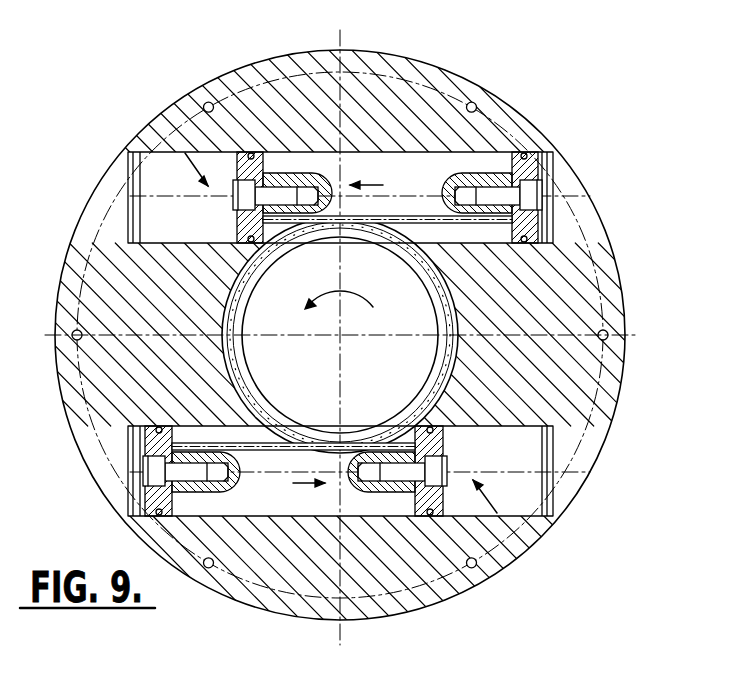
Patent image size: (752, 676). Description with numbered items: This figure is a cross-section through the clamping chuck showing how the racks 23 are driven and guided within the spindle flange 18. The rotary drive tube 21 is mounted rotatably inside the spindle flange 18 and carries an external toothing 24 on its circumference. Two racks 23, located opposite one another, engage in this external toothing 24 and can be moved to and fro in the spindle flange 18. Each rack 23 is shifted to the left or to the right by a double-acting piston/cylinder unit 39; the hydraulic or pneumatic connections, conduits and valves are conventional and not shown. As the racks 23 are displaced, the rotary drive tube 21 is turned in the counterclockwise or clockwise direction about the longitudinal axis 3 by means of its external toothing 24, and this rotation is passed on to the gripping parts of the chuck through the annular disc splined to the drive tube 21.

The spindle flange 18 is at (263, 107).
The racks 23 is at (365, 167).
The external toothing 24 is at (418, 220).
The rotary drive tube 21 is at (459, 307).
The double-acting piston/cylinder unit 39 is at (182, 150).
The longitudinal axis 3 is at (339, 337).